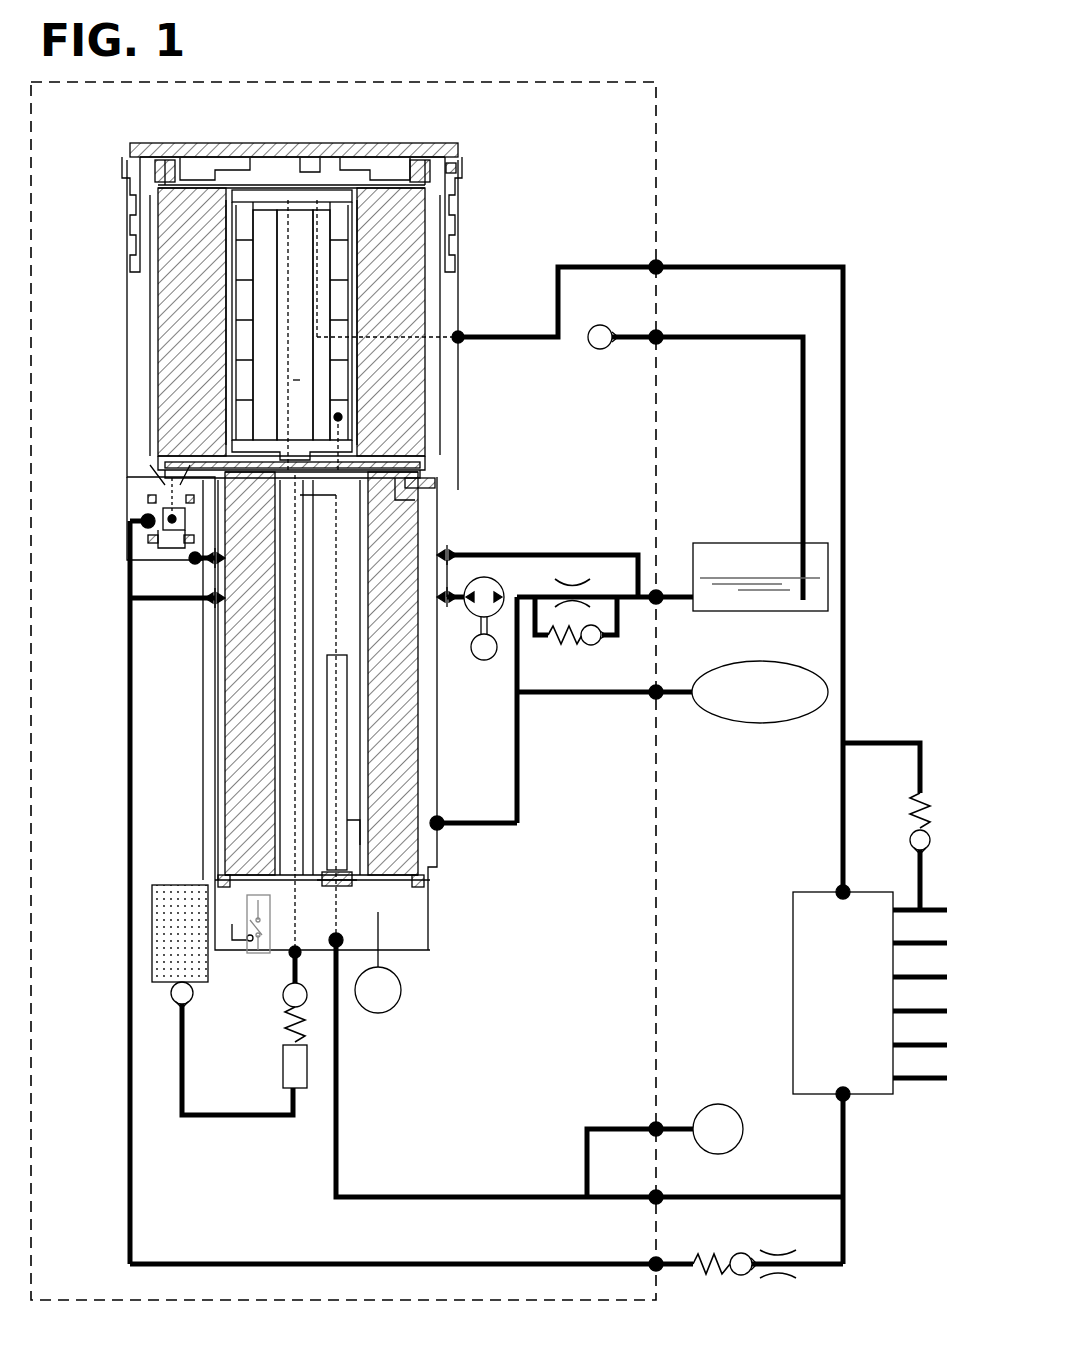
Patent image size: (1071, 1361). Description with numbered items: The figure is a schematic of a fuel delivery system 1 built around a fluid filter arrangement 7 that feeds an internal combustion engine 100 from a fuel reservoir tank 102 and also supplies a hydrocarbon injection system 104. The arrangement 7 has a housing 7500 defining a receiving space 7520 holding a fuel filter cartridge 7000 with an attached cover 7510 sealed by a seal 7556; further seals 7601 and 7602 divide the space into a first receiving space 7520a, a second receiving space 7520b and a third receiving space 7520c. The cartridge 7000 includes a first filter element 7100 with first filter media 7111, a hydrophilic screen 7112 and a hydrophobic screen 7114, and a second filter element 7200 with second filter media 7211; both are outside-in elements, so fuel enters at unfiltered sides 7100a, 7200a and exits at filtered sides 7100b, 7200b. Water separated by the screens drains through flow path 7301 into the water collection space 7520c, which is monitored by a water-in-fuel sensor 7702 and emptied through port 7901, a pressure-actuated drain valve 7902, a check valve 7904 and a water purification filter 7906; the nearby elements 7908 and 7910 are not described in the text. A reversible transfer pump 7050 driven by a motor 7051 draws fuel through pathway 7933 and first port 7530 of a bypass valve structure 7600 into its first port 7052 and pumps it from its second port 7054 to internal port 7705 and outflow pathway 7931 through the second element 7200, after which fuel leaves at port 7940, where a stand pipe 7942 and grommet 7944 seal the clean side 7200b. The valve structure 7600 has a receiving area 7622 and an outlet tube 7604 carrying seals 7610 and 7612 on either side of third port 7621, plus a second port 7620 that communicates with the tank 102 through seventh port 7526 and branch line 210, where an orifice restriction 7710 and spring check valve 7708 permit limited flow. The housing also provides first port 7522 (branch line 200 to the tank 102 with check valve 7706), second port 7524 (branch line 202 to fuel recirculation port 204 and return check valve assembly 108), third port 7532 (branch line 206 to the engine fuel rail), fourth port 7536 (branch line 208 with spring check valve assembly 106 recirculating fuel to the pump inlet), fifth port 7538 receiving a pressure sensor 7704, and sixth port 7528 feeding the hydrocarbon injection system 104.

The fuel delivery system 1 is at (840, 152).
The fluid filter arrangement 7 is at (690, 120).
The internal combustion engine 100 is at (792, 944).
The fuel reservoir tank 102 is at (775, 614).
The hydrocarbon injection system 104 is at (808, 720).
The spring check valve assembly 106 is at (748, 1254).
The high pressure return spring check valve assembly 108 is at (912, 840).
The branch line 200 is at (800, 394).
The branch line 202 is at (846, 422).
The fuel recirculation port 204 is at (840, 890).
The branch line 206 is at (766, 1194).
The branch line 208 is at (846, 1252).
The branch line 210 is at (676, 603).
The fuel filter cartridge 7000 is at (422, 296).
The reversible fuel transfer pump 7050 is at (490, 580).
The motor 7051 is at (484, 661).
The first port 7052 is at (465, 610).
The second port 7054 is at (517, 605).
The first filter element 7100 is at (162, 290).
The unfiltered side 7100a is at (442, 404).
The filtered side 7100b is at (298, 402).
The first filter media 7111 is at (182, 325).
The hydrophilic screen 7112 is at (348, 330).
The hydrophobic screen 7114 is at (322, 386).
The second filter element 7200 is at (226, 772).
The unfiltered side 7200a is at (218, 702).
The clean side 7200b is at (327, 745).
The second filter media 7211 is at (246, 790).
The flow path 7301 is at (293, 852).
The housing 7500 is at (150, 375).
The cover 7510 is at (464, 156).
The receiving space 7520 is at (147, 395).
The first receiving space 7520a is at (147, 406).
The second receiving space 7520b is at (430, 776).
The third receiving space 7520c is at (426, 944).
The first port 7522 is at (660, 334).
The second port 7524 is at (660, 264).
The seventh port 7526 is at (660, 592).
The sixth port 7528 is at (660, 700).
The first port 7530 is at (142, 520).
The third port 7532 is at (660, 1194).
The fourth port 7536 is at (650, 1262).
The fifth port 7538 is at (660, 1124).
The seal 7556 is at (458, 170).
The bypass valve structure 7600 is at (134, 488).
The seal 7601 is at (438, 492).
The seal 7602 is at (424, 882).
The outlet tube 7604 is at (150, 470).
The seal 7610 is at (150, 506).
The seal 7612 is at (152, 544).
The second port 7620 is at (194, 566).
The third port 7621 is at (170, 522).
The receiving area 7622 is at (152, 564).
The water-in-fuel sensor 7702 is at (460, 336).
The pressure sensor 7704 is at (745, 1124).
The internal port 7705 is at (442, 826).
The check valve 7706 is at (594, 348).
The spring check valve 7708 is at (590, 648).
The orifice restriction 7710 is at (566, 592).
The port 7901 is at (293, 962).
The pressure-actuated drain valve 7902 is at (286, 1022).
The check valve 7904 is at (194, 1002).
The water purification filter 7906 is at (200, 984).
The heater 7908 is at (228, 916).
The switch 7910 is at (262, 952).
The fuel outflow path 7931 is at (334, 646).
The pathway 7933 is at (286, 410).
The port 7940 is at (340, 966).
The stand pipe 7942 is at (354, 892).
The grommet 7944 is at (350, 828).